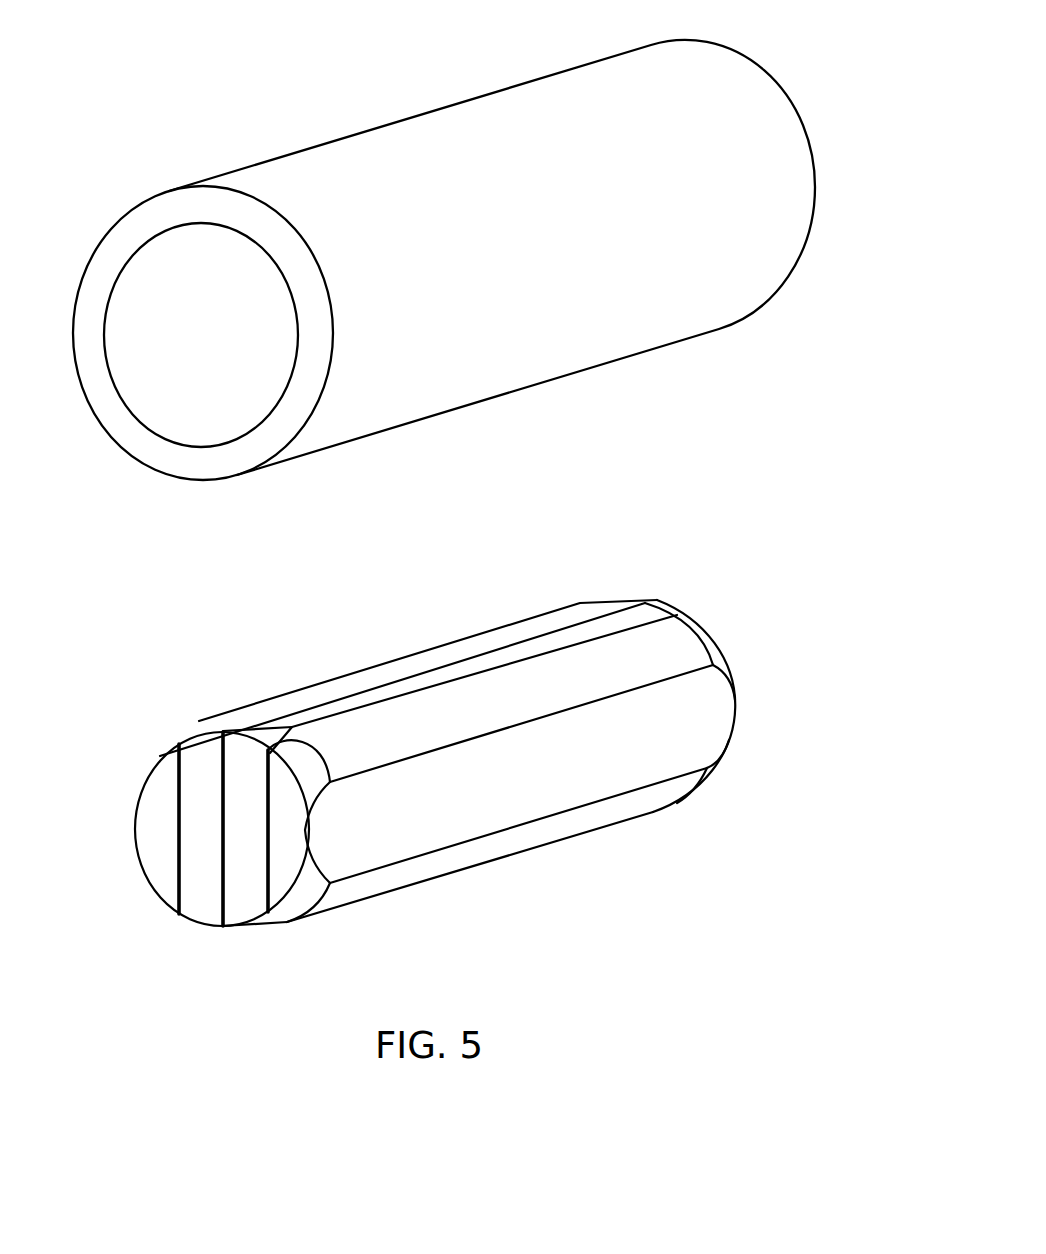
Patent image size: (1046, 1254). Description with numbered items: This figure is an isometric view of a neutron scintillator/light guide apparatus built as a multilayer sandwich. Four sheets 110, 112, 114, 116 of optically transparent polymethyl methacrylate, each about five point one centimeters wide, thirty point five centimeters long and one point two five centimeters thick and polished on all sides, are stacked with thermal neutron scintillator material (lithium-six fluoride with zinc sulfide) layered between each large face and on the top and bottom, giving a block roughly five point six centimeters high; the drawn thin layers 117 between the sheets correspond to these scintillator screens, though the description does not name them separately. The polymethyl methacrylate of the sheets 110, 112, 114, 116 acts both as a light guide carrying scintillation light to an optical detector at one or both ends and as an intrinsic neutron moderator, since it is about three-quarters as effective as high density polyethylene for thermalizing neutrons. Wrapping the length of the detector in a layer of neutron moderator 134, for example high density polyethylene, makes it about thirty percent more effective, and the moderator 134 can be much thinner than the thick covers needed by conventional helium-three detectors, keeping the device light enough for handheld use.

The neutron moderator 134 is at (132, 236).
The sheet of optically transparent polymethyl methacrylate 110 is at (411, 771).
The sheet of optically transparent polymethyl methacrylate 112 is at (185, 878).
The sheet of optically transparent polymethyl methacrylate 114 is at (233, 891).
The sheet of optically transparent polymethyl methacrylate 116 is at (284, 885).
The longitudinal slots 117 is at (270, 752).